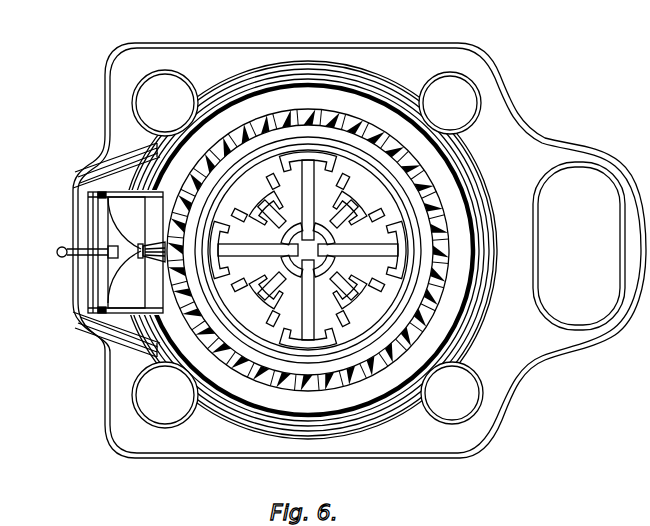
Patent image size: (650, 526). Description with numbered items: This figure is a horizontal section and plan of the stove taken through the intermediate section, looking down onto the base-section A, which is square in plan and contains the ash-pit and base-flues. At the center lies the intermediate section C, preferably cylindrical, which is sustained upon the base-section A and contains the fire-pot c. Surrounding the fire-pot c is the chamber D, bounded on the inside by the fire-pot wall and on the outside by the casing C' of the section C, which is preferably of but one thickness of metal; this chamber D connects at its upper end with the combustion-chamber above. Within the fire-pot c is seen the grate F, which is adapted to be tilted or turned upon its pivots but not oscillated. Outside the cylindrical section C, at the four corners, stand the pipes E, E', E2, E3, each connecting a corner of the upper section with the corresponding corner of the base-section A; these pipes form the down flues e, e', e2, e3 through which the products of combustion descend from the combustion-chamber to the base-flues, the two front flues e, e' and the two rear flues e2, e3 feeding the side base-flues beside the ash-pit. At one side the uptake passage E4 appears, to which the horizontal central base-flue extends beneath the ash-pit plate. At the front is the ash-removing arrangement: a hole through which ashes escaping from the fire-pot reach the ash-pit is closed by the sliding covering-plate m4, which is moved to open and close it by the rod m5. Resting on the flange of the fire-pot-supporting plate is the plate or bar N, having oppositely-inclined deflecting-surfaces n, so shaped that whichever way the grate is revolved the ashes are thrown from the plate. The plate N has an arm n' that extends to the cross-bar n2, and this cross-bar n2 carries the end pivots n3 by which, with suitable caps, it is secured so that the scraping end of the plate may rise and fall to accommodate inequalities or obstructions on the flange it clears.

The base-section A is at (377, 57).
The chamber D is at (299, 62).
The intermediate section C is at (323, 250).
The casing C' is at (319, 250).
The fire-pot c is at (308, 244).
The grate F is at (308, 250).
The pipe E is at (165, 103).
The down flue e is at (165, 103).
The pipe E2 is at (450, 103).
The down flue e2 is at (450, 103).
The pipe E' is at (165, 395).
The down flue e' is at (165, 395).
The pipe E3 is at (452, 393).
The down flue e3 is at (452, 393).
The uptake passage E4 is at (579, 246).
The plate or bar N is at (132, 254).
The deflecting-surfaces n is at (154, 265).
The arm n' is at (124, 242).
The cross-bar n2 is at (113, 277).
The end pivots n3 is at (153, 246).
The rod m5 is at (57, 255).
The sliding covering-plate m4 is at (123, 235).